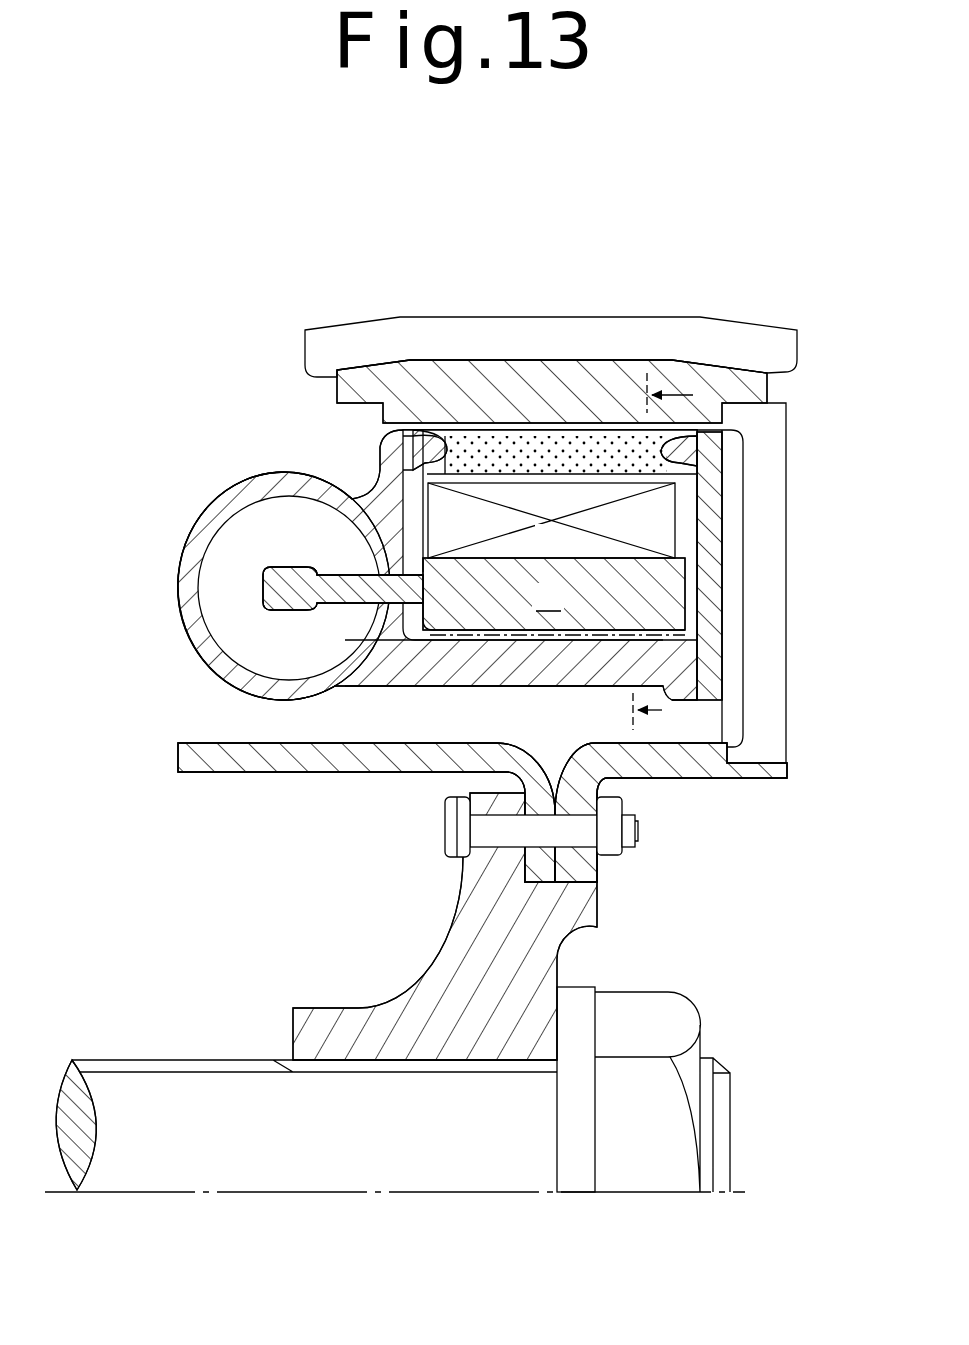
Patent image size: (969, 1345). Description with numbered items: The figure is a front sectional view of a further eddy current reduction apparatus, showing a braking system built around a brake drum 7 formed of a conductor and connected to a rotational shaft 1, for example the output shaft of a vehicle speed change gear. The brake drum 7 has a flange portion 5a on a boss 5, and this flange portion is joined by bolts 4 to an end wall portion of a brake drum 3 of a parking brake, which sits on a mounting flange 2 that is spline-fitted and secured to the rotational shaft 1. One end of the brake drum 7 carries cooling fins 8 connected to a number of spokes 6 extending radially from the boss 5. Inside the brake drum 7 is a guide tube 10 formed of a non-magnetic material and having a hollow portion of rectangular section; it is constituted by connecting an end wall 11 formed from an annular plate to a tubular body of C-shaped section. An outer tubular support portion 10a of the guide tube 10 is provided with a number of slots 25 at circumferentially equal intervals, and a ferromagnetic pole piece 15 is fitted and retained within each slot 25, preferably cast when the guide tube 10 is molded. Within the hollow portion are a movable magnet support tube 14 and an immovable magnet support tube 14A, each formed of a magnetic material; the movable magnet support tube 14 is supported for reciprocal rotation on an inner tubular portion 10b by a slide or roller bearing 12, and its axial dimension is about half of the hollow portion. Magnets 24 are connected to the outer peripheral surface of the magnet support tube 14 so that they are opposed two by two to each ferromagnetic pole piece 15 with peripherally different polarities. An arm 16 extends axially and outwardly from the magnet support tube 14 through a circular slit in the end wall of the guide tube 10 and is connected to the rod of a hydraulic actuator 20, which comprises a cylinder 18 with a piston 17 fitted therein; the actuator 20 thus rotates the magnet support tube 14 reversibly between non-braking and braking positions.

The rotational shaft 1 is at (217, 1080).
The mounting flange 2 is at (462, 948).
The brake drum of a parking brake 3 is at (316, 766).
The bolts 4 is at (639, 830).
The boss 5 is at (709, 768).
The flange portion 5a is at (573, 873).
The spokes 6 is at (773, 670).
The brake drum 7 is at (770, 380).
The cooling fins 8 is at (762, 338).
The guide tube 10 is at (376, 465).
The outer tubular support portion 10a is at (415, 440).
The inner tubular portion 10b is at (523, 670).
The end wall 11 is at (710, 585).
The slide or roller bearing 12 is at (630, 627).
The movable magnet support tube 14 is at (554, 594).
The immovable magnet support tube 14A is at (633, 552).
The ferromagnetic pole piece 15 is at (498, 440).
The arm 16 is at (346, 583).
The piston 17 is at (238, 543).
The cylinder 18 is at (216, 654).
The actuator 20 is at (163, 606).
The magnets 24 is at (657, 537).
The slots 25 is at (452, 440).